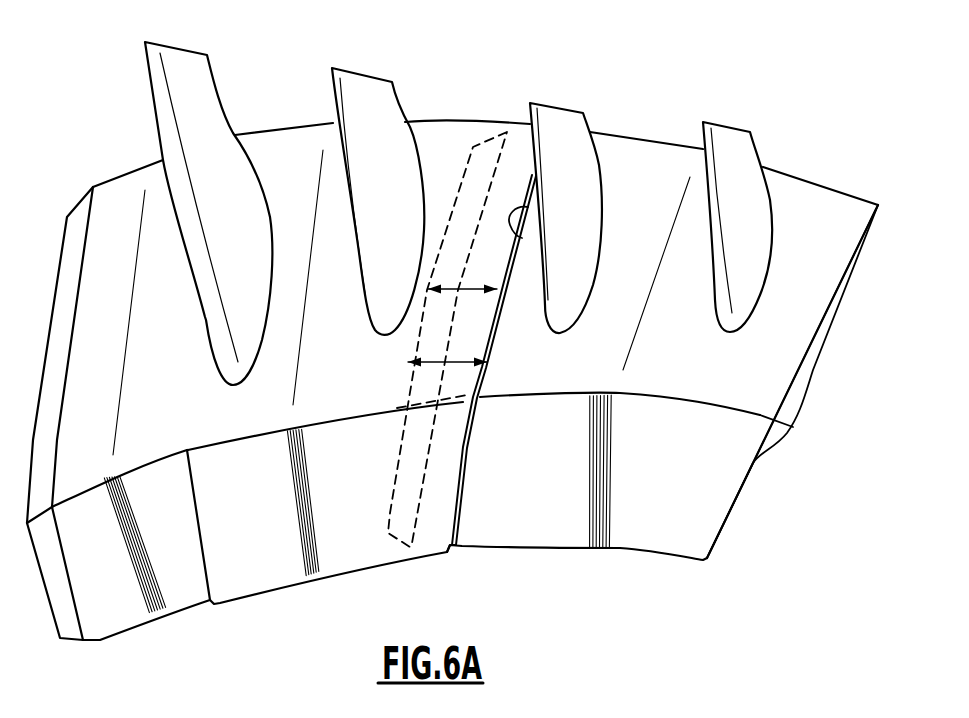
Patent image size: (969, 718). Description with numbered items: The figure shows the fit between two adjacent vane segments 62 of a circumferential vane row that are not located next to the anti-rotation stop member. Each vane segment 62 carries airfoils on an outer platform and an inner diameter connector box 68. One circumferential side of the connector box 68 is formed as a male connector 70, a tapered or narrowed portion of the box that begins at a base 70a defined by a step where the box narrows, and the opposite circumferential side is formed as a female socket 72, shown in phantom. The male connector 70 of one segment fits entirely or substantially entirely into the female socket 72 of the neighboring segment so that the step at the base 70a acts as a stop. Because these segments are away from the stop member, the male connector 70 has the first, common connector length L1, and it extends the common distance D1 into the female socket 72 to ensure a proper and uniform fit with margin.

The vane segment 62 is at (122, 165).
The connector box 68 is at (256, 556).
The male connector 70 is at (460, 515).
The base 70a is at (537, 210).
The female socket 72 is at (433, 500).
The distance D1 is at (470, 291).
The first connector length L1 is at (453, 360).